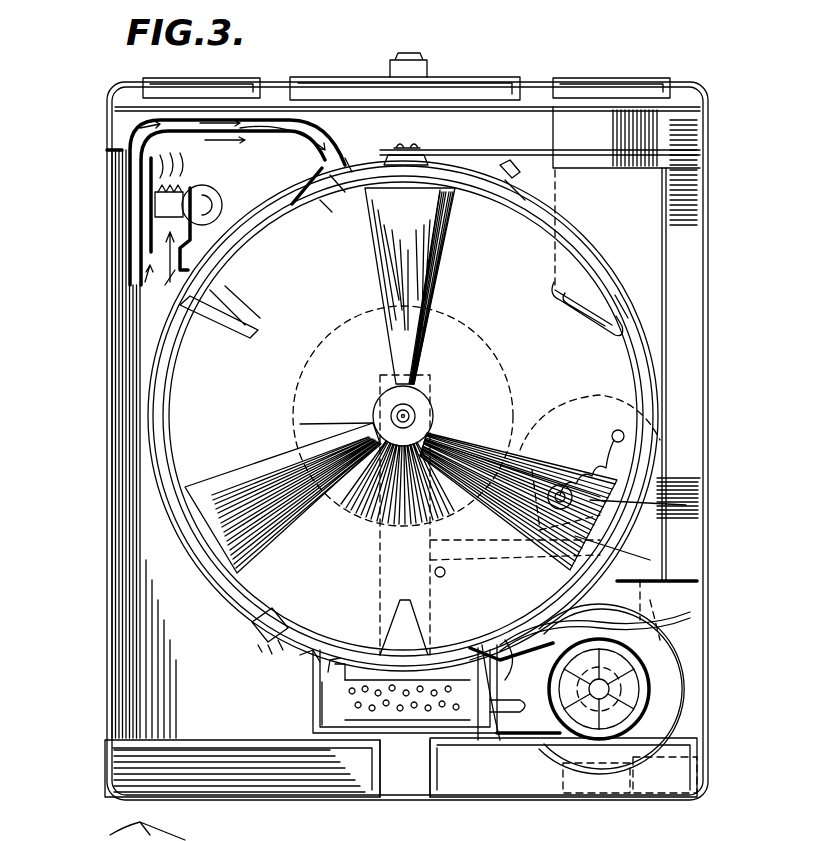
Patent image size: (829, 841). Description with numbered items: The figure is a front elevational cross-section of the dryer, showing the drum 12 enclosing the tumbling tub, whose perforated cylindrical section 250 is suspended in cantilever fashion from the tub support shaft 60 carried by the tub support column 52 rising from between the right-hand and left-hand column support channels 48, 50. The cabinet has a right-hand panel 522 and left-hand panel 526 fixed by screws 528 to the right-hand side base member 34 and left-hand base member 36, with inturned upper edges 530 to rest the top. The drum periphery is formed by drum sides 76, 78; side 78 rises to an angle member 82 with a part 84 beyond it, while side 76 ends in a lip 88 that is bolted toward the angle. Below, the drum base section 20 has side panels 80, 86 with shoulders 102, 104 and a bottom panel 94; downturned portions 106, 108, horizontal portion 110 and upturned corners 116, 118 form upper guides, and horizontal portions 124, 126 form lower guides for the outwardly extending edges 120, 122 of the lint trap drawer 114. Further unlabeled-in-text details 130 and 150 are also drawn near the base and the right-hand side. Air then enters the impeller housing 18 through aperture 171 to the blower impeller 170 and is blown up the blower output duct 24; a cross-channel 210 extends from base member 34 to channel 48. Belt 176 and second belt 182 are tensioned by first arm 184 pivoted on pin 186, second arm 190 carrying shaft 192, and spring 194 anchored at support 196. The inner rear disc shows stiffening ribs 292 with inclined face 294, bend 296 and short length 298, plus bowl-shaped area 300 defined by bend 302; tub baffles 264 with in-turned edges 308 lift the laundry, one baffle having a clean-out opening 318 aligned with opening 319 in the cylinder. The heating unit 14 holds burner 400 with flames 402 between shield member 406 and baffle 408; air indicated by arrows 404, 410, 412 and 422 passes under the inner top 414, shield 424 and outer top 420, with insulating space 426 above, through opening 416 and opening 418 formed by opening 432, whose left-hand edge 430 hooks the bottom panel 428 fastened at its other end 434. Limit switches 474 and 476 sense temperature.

The drum 12 is at (188, 581).
The heating unit 14 is at (262, 186).
The impeller housing 18 is at (690, 715).
The drum base section 20 is at (306, 714).
The blower output duct 24 is at (694, 344).
The right-hand side base member 34 is at (700, 768).
The left-hand base member 36 is at (106, 772).
The right-hand column support channel 48 is at (432, 790).
The left-hand column support channel 50 is at (380, 790).
The tub support column 52 is at (380, 578).
The tub support shaft 60 is at (410, 412).
The right-hand drum side 76 is at (560, 240).
The left-hand drum side 78 is at (220, 598).
The left-hand side panel 80 is at (312, 680).
The angle member 82 is at (500, 168).
The extending part 84 is at (525, 200).
The right-hand side panel 86 is at (520, 645).
The lip 88 is at (520, 172).
The bottom panel 94 is at (380, 742).
The shoulder 102 is at (304, 662).
The shoulder 104 is at (490, 636).
The downturned portion 106 is at (326, 666).
The downturned portion 108 is at (486, 660).
The horizontal portion 110 is at (338, 662).
The lint trap drawer 114 is at (384, 674).
The upturned corner 116 is at (346, 670).
The upturned corner 118 is at (484, 700).
The outwardly extending edge 120 is at (318, 716).
The outwardly extending edge 122 is at (500, 742).
The horizontal portion 124 is at (336, 728).
The horizontal portion 126 is at (476, 742).
The bracket 130 is at (510, 712).
The rear wall insulation 150 is at (680, 500).
The blower impeller 170 is at (625, 676).
The aperture 171 is at (580, 728).
The belt 176 is at (632, 616).
The second belt 182 is at (522, 400).
The first arm 184 is at (520, 554).
The pin 186 is at (452, 566).
The second arm 190 is at (686, 505).
The shaft 192 is at (548, 497).
The spring 194 is at (596, 470).
The support 196 is at (620, 430).
The cross-channel 210 is at (560, 790).
The perforated cylindrical section 250 is at (168, 410).
The tub baffles 264 is at (250, 320).
The stiffening ribs 292 is at (296, 518).
The flat inclined face 294 is at (340, 230).
The bend 296 is at (436, 200).
The short length 298 is at (446, 195).
The bowl-shaped area 300 is at (362, 380).
The bend 302 is at (336, 411).
The in-turned edges 308 is at (232, 302).
The opening 318 is at (606, 330).
The opening 319 is at (618, 292).
The burner 400 is at (165, 222).
The combustion flames 402 is at (150, 190).
The arrows 404 is at (204, 205).
The shield member 406 is at (180, 248).
The baffle 408 is at (190, 192).
The arrow 410 is at (150, 280).
The arrows 412 is at (135, 165).
The combustion chamber inner top 414 is at (130, 198).
The opening 416 is at (296, 120).
The opening 418 is at (347, 160).
The combustion chamber outer top 420 is at (300, 96).
The arrow 422 is at (220, 96).
The combustion chamber shield 424 is at (140, 232).
The space 426 is at (390, 60).
The bottom panel 428 is at (335, 190).
The left-hand edge 430 is at (340, 192).
The opening 432 is at (325, 205).
The other end 434 is at (165, 285).
The first temperature limit switch 474 is at (410, 150).
The second temperature limit switch 476 is at (250, 640).
The right-hand panel 522 is at (688, 480).
The left-hand panel 526 is at (118, 520).
The screws 528 is at (106, 760).
The inturned upper edge 530 is at (700, 150).